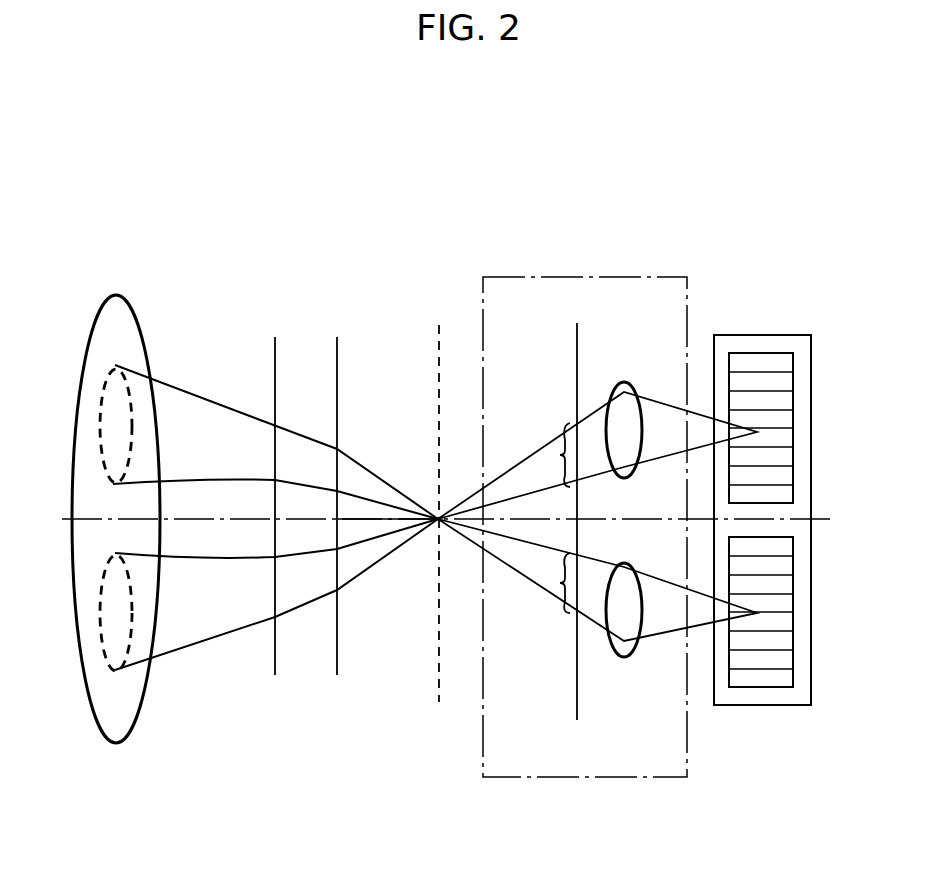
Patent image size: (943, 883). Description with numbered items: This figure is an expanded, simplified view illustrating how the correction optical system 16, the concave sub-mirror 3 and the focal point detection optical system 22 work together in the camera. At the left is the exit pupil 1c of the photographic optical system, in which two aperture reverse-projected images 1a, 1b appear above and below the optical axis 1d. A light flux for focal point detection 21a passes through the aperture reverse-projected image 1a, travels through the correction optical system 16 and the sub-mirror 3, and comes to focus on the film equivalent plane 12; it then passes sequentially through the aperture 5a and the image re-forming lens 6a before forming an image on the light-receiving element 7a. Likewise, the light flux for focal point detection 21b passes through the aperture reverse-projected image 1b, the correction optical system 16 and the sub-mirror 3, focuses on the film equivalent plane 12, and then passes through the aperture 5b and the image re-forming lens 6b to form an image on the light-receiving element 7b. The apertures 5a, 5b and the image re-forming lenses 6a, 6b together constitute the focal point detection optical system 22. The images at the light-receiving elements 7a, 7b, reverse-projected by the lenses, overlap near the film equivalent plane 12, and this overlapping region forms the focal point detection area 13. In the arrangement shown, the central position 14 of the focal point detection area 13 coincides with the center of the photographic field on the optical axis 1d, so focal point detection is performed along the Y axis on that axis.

The aperture reverse-projected image 1a is at (100, 437).
The aperture reverse-projected image 1b is at (100, 637).
The exit pupil 1c is at (116, 745).
The optical axis 1d is at (385, 518).
The sub-mirror 3 is at (336, 655).
The film equivalent plane 12 is at (438, 688).
The focal point detection area 13 is at (436, 568).
The central position 14 is at (441, 518).
The correction optical system 16 is at (275, 657).
The light flux for focal point detection 21a is at (218, 412).
The light flux for focal point detection 21b is at (208, 640).
The focal point detection optical system 22 is at (622, 290).
The aperture 5a is at (555, 598).
The aperture 5b is at (560, 440).
The image re-forming lens 6a is at (624, 658).
The image re-forming lens 6b is at (623, 382).
The light-receiving element 7a is at (792, 600).
The light-receiving element 7b is at (792, 428).